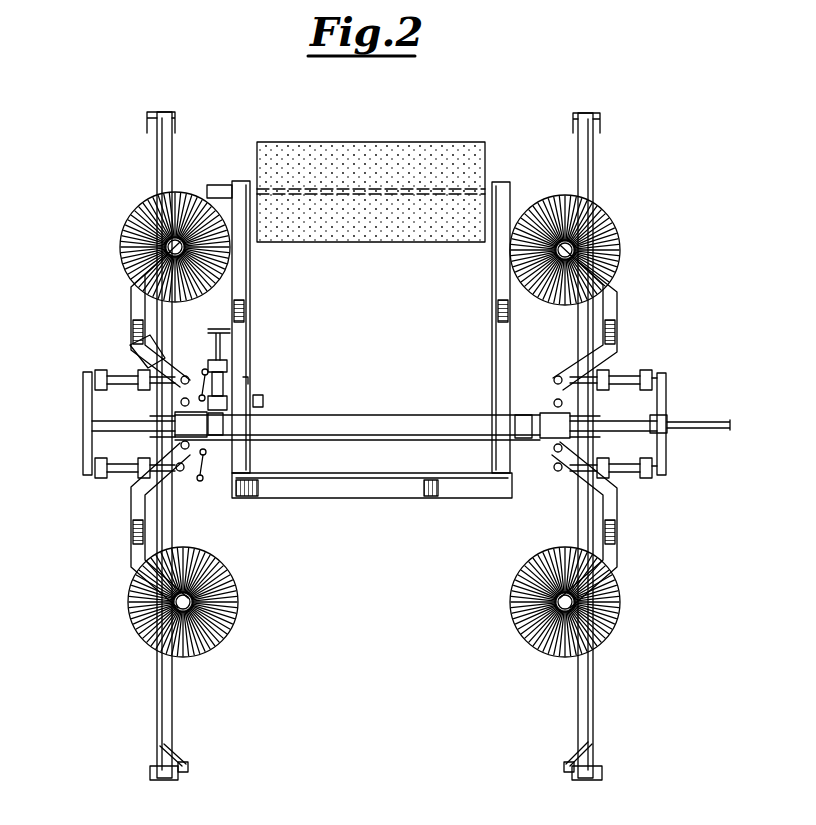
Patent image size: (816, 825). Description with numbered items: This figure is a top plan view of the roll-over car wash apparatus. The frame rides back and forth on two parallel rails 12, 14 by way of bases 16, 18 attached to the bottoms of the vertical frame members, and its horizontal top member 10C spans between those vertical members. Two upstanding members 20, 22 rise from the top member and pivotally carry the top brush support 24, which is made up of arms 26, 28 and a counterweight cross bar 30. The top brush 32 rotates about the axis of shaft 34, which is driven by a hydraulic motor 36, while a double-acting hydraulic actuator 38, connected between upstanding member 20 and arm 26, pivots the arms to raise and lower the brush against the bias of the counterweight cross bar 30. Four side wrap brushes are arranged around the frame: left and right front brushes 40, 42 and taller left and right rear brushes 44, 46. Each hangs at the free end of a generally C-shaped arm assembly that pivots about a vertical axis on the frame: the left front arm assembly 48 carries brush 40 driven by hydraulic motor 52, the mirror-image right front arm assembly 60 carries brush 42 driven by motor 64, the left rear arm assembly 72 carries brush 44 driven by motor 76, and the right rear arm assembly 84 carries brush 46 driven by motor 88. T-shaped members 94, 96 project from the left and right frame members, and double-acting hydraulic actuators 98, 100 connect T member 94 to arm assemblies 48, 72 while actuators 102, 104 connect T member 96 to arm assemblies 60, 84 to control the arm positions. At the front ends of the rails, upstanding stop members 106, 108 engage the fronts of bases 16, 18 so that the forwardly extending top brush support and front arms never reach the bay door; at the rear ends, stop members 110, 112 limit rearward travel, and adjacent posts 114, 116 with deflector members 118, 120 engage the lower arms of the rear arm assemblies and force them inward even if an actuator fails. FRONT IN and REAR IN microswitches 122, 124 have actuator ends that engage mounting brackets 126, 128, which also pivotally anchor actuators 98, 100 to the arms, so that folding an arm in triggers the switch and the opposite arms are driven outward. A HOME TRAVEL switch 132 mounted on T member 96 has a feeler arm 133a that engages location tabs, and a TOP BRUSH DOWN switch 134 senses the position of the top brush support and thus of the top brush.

The horizontal top member 10C is at (360, 415).
The rail 12 is at (172, 700).
The rail 14 is at (580, 715).
The base 16 is at (150, 440).
The base 18 is at (590, 440).
The upstanding member 20 is at (225, 420).
The upstanding member 22 is at (495, 420).
The top brush support 24 is at (453, 512).
The arm 26 is at (250, 340).
The arm 28 is at (492, 340).
The counterweight cross bar 30 is at (365, 500).
The top brush 32 is at (290, 140).
The shaft 34 is at (388, 185).
The hydraulic motor 36 is at (232, 183).
The hydraulic actuator 38 is at (225, 372).
The left front side wrap brush 40 is at (120, 243).
The right front side wrap brush 42 is at (600, 215).
The left rear side wrap brush 44 is at (140, 625).
The right rear side wrap brush 46 is at (508, 625).
The left front arm assembly 48 is at (130, 297).
The hydraulic motor 52 is at (135, 225).
The right front arm assembly 60 is at (615, 300).
The hydraulic drive motor 64 is at (595, 248).
The left rear arm assembly 72 is at (128, 530).
The hydraulic motor 76 is at (235, 632).
The right rear arm assembly 84 is at (614, 535).
The hydraulic motor 88 is at (620, 628).
The T-shaped member 94 is at (82, 420).
The T-shaped member 96 is at (686, 424).
The hydraulic actuator 98 is at (115, 375).
The hydraulic actuator 100 is at (118, 470).
The hydraulic actuator 102 is at (622, 378).
The hydraulic actuator 104 is at (630, 470).
The stop member 106 is at (152, 112).
The stop member 108 is at (592, 113).
The stop member 110 is at (165, 782).
The stop member 112 is at (590, 782).
The post 114 is at (188, 767).
The post 116 is at (570, 768).
The deflector member 118 is at (182, 752).
The deflector member 120 is at (578, 752).
The FRONT IN arm position sensing microswitch 122 is at (223, 388).
The REAR IN arm position sensing microswitch 124 is at (220, 445).
The mounting bracket 126 is at (135, 345).
The mounting bracket 128 is at (190, 478).
The HOME TRAVEL switch 132 is at (665, 420).
The feeler arm 133a is at (718, 424).
The TOP BRUSH DOWN switch 134 is at (258, 394).